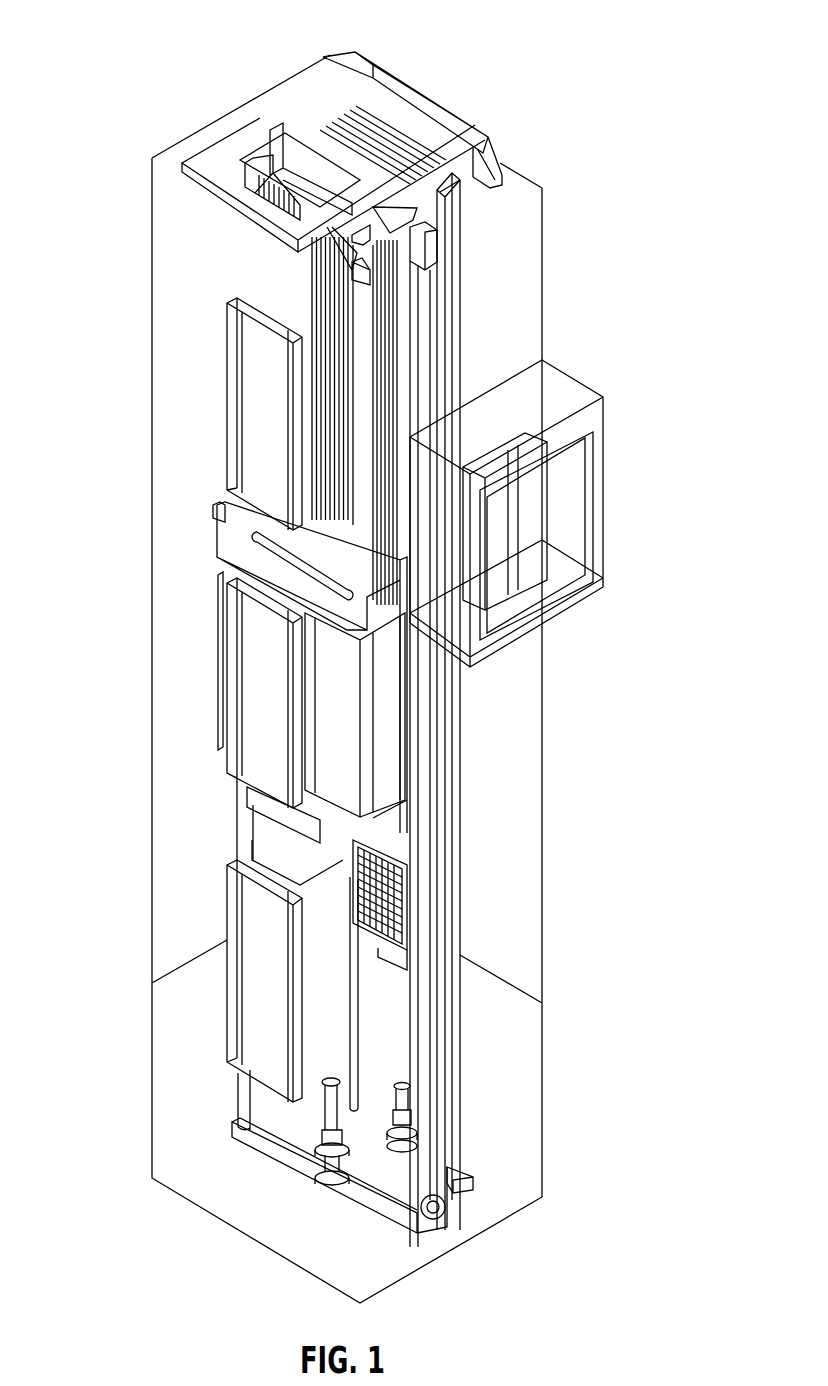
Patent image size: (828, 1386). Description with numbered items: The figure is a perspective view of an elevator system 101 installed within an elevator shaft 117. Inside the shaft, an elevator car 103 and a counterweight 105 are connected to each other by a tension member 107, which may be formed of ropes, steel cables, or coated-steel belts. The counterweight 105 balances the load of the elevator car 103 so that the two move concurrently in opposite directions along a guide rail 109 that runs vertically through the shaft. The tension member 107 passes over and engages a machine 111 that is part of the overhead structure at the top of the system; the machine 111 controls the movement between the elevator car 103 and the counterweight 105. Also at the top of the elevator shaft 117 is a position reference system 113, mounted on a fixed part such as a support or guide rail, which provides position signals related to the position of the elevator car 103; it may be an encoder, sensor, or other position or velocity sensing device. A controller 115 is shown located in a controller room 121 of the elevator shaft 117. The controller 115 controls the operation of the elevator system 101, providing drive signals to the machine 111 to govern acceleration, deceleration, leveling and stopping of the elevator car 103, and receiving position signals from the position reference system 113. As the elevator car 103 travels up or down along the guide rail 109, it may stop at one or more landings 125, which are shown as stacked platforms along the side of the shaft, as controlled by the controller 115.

The elevator system 101 is at (563, 78).
The elevator car 103 is at (343, 722).
The counterweight 105 is at (395, 917).
The tension member 107 is at (347, 405).
The guide rail 109 is at (432, 835).
The machine 111 is at (253, 153).
The position reference system 113 is at (430, 250).
The controller 115 is at (543, 527).
The elevator shaft 117 is at (205, 840).
The controller room 121 is at (605, 398).
The landings 125 is at (225, 402).